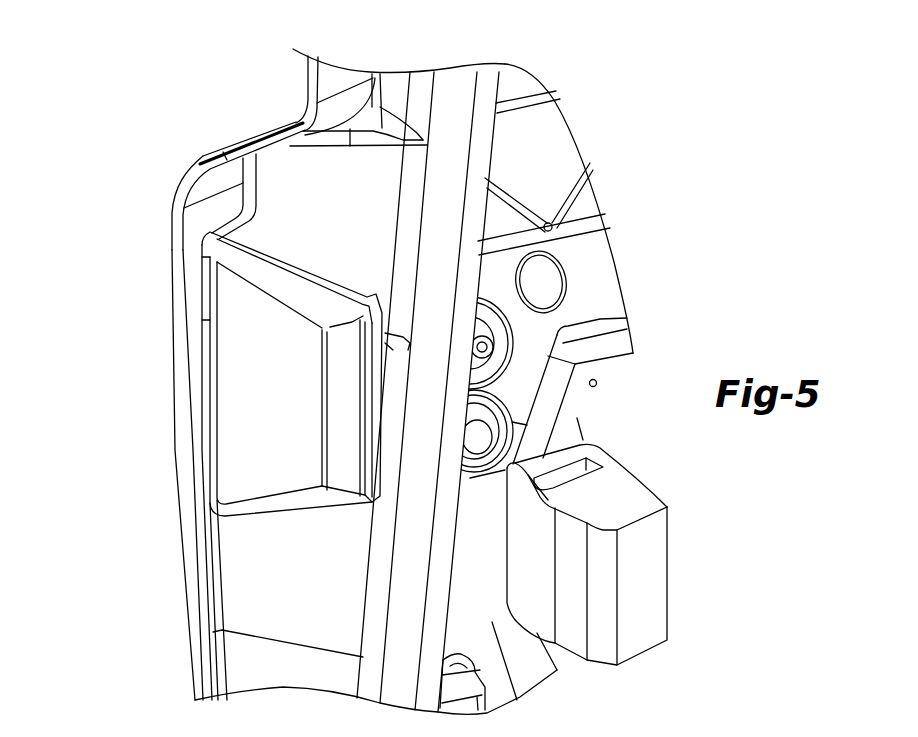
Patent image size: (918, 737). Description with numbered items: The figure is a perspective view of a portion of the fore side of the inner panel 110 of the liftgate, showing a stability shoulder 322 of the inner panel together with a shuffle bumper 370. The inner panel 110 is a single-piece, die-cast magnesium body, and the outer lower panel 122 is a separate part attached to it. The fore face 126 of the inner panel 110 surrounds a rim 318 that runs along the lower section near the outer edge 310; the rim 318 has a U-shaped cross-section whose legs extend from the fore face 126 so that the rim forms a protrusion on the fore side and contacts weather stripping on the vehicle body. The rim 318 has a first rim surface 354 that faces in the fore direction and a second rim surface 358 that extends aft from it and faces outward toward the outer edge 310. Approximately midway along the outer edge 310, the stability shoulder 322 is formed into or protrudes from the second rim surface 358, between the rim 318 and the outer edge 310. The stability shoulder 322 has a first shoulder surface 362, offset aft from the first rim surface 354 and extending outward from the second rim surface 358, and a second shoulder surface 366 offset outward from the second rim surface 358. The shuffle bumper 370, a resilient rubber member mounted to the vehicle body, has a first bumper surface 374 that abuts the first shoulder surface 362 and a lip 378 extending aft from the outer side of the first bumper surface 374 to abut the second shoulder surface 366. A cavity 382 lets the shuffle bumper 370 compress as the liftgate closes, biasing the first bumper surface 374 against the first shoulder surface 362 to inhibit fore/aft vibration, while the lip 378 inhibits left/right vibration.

The inner panel 110 is at (176, 575).
The outer lower panel 122 is at (172, 248).
The fore face 126 is at (595, 263).
The outer edge 310 is at (250, 150).
The rim 318 is at (400, 588).
The stability shoulder 322 is at (240, 481).
The first rim surface 354 is at (462, 129).
The second rim surface 358 is at (320, 187).
The first shoulder surface 362 is at (358, 400).
The second shoulder surface 366 is at (278, 382).
The shuffle bumper 370 is at (678, 537).
The first bumper surface 374 is at (582, 416).
The lip 378 is at (517, 470).
The cavity 382 is at (601, 460).